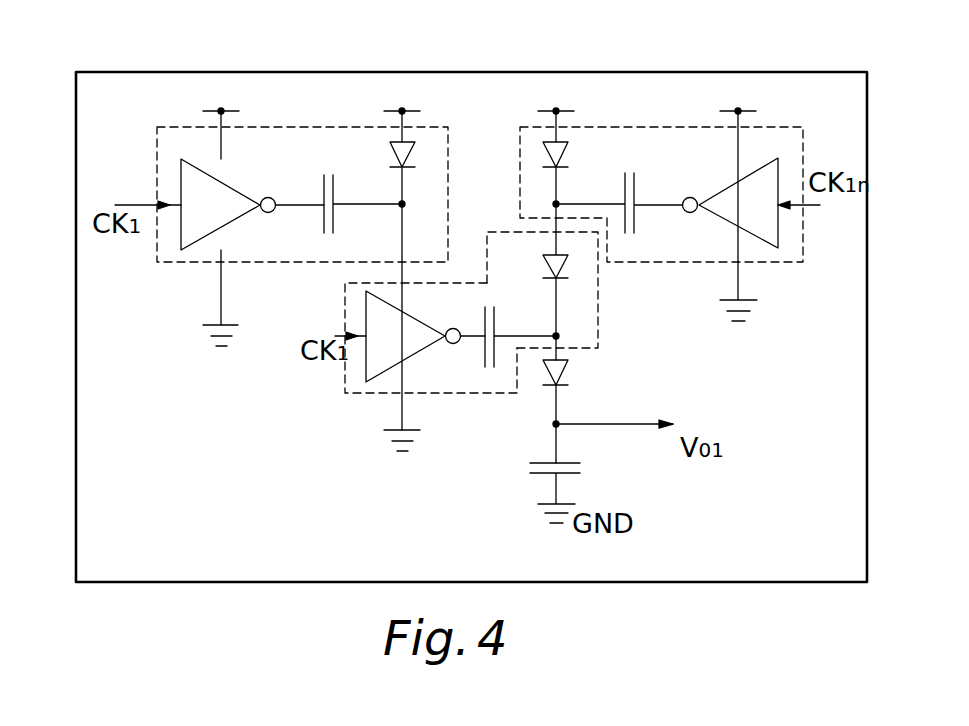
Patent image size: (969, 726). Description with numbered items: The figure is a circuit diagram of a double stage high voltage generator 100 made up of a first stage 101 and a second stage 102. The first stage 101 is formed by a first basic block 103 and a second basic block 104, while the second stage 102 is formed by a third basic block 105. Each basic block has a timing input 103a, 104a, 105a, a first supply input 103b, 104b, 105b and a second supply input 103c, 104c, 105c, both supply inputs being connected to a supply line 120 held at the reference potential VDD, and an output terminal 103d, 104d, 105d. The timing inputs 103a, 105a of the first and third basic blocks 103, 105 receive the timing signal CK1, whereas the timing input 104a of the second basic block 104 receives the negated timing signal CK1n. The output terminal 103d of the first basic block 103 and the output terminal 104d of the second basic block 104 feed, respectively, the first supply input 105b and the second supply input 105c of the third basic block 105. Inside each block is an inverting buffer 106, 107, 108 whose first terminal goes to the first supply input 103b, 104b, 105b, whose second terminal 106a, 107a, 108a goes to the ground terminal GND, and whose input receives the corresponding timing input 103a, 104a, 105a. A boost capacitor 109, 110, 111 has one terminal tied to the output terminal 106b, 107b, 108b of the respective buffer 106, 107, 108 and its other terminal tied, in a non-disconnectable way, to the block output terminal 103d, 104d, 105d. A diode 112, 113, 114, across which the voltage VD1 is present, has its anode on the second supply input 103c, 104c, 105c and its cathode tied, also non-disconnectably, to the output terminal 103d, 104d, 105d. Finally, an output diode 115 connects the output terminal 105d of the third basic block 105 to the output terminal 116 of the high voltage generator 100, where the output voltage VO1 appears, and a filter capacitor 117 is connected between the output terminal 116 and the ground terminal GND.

The high voltage generator 100 is at (803, 555).
The first stage 101 is at (100, 147).
The second stage 102 is at (318, 392).
The first basic block 103 is at (273, 145).
The timing input 103a is at (145, 207).
The first supply input 103b is at (221, 143).
The second supply input 103c is at (397, 140).
The output terminal 103d is at (403, 241).
The second basic block 104 is at (828, 140).
The timing input 104a is at (807, 208).
The first supply input 104b is at (738, 150).
The second supply input 104c is at (556, 132).
The output terminal 104d is at (553, 186).
The third basic block 105 is at (590, 318).
The timing input 105a is at (320, 385).
The first supply input 105b is at (403, 300).
The second supply input 105c is at (556, 240).
The output terminal 105d is at (556, 317).
The inverting buffer 106 is at (197, 225).
The second terminal 106a is at (213, 312).
The output terminal 106b is at (272, 214).
The inverting buffer 107 is at (762, 218).
The second terminal 107a is at (737, 282).
The output terminal 107b is at (652, 207).
The inverting buffer 108 is at (380, 355).
The second terminal 108a is at (400, 413).
The output terminal 108b is at (453, 345).
The boost capacitor 109 is at (323, 228).
The boost capacitor 110 is at (634, 186).
The boost capacitor 111 is at (487, 347).
The diode 112 is at (390, 153).
The diode 113 is at (545, 145).
The diode 114 is at (547, 263).
The output diode 115 is at (552, 372).
The output terminal 116 is at (625, 425).
The filter capacitor 117 is at (540, 478).
The supply line 120 is at (221, 113).